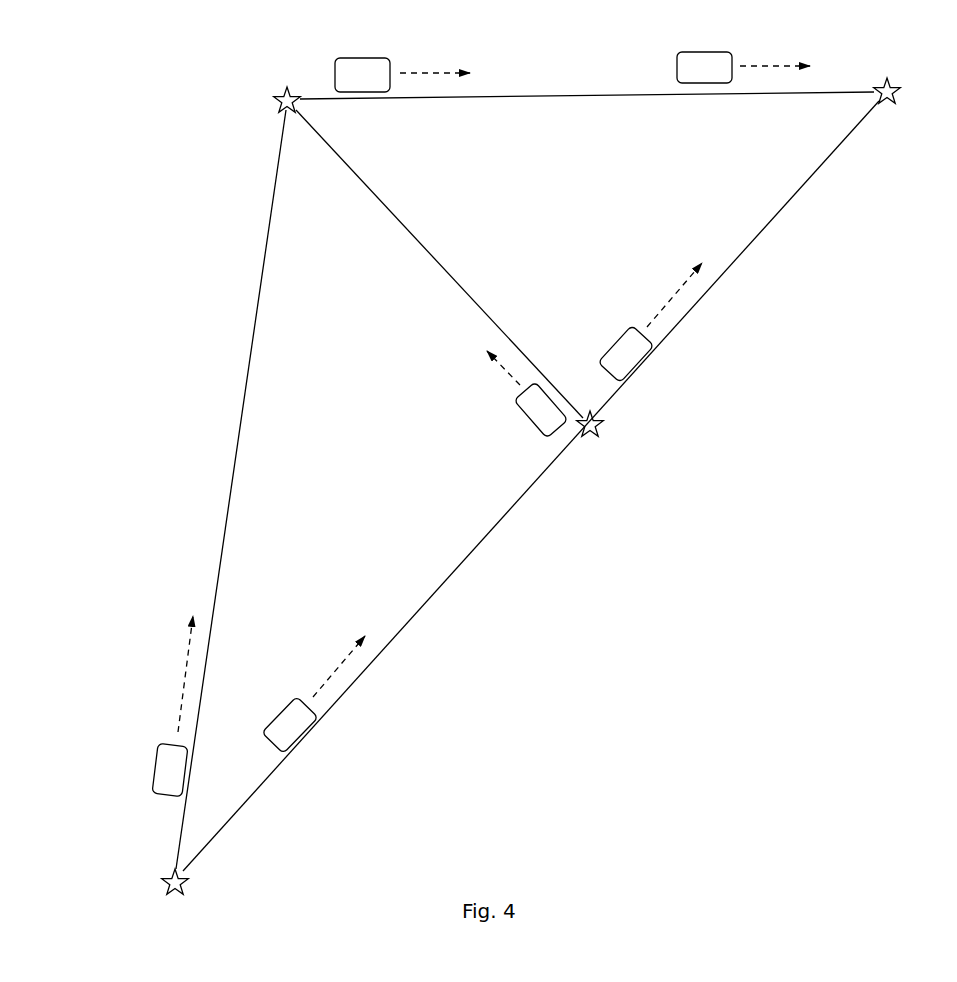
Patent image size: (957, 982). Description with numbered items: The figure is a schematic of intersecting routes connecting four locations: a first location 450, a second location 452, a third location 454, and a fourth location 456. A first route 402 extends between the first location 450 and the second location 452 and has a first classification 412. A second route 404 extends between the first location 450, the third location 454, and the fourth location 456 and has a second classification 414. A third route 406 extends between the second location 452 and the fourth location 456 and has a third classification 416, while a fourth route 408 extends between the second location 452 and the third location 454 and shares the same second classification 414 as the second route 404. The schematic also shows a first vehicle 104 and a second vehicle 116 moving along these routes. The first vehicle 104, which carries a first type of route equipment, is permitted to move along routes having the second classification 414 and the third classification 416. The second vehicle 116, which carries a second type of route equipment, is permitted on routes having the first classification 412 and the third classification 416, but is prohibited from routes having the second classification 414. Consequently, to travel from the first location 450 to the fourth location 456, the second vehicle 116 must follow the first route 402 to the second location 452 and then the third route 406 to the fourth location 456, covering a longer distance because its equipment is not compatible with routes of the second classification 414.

The first vehicle 104 is at (725, 51).
The second vehicle 116 is at (382, 54).
The first route 402 is at (222, 563).
The second route 404 is at (721, 288).
The third route 406 is at (587, 131).
The fourth route 408 is at (466, 296).
The first classification 412 is at (253, 489).
The second classification 414 is at (532, 486).
The third classification 416 is at (678, 94).
The first location 450 is at (168, 897).
The second location 452 is at (279, 88).
The third location 454 is at (610, 432).
The fourth location 456 is at (900, 80).